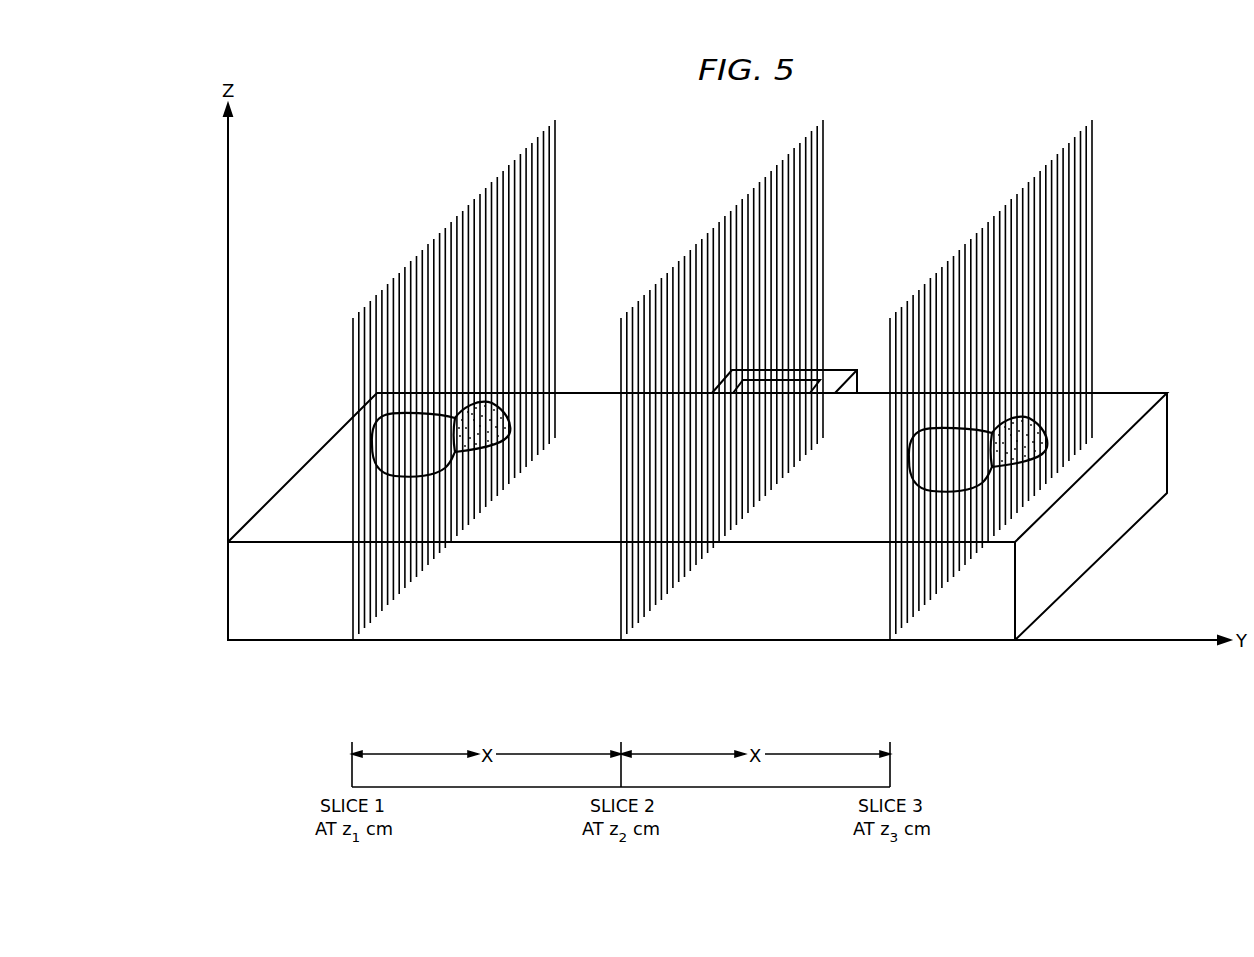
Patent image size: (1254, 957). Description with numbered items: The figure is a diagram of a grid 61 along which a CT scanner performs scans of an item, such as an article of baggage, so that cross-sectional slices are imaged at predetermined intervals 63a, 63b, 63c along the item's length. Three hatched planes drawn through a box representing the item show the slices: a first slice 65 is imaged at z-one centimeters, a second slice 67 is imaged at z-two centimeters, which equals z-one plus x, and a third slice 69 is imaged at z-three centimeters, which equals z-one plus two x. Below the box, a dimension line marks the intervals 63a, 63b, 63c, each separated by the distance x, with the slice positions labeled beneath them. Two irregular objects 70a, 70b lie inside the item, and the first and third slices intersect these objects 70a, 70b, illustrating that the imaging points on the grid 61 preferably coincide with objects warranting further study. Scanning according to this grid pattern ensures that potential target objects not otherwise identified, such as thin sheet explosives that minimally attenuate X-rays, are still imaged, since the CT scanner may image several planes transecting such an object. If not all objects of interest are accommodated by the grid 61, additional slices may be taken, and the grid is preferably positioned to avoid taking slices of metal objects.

The grid 61 is at (239, 773).
The predetermined interval 63a is at (352, 744).
The predetermined interval 63b is at (621, 744).
The predetermined interval 63c is at (889, 744).
The first slice 65 is at (518, 157).
The second slice 67 is at (786, 157).
The third slice 69 is at (1056, 157).
The object 70a is at (500, 405).
The object 70b is at (1040, 420).